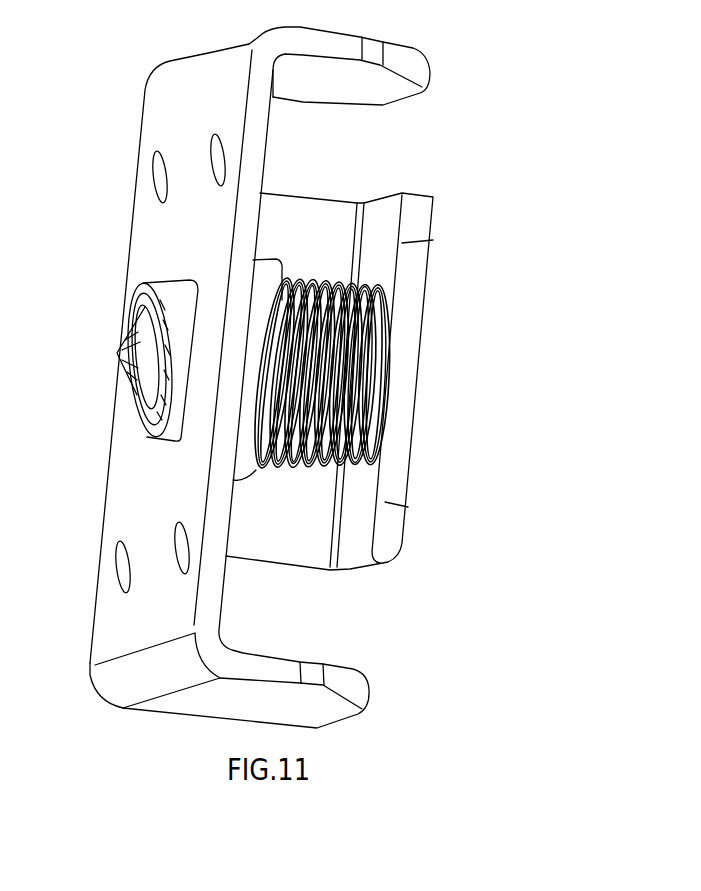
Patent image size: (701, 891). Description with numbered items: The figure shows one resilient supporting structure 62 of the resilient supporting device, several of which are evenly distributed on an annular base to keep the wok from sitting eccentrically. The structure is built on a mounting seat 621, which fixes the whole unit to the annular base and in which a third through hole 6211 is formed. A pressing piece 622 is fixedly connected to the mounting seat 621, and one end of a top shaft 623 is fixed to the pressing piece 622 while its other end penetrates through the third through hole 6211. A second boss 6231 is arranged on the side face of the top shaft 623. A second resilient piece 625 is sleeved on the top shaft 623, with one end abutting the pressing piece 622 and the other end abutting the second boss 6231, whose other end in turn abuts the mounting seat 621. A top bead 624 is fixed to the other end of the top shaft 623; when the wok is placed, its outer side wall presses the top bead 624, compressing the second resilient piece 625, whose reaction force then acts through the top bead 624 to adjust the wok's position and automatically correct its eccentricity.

The resilient supporting structure 62 is at (320, 377).
The mounting seat 621 is at (258, 162).
The third through hole 6211 is at (181, 286).
The pressing piece 622 is at (410, 228).
The top shaft 623 is at (181, 417).
The second boss 6231 is at (256, 266).
The top bead 624 is at (131, 352).
The second resilient piece 625 is at (391, 447).